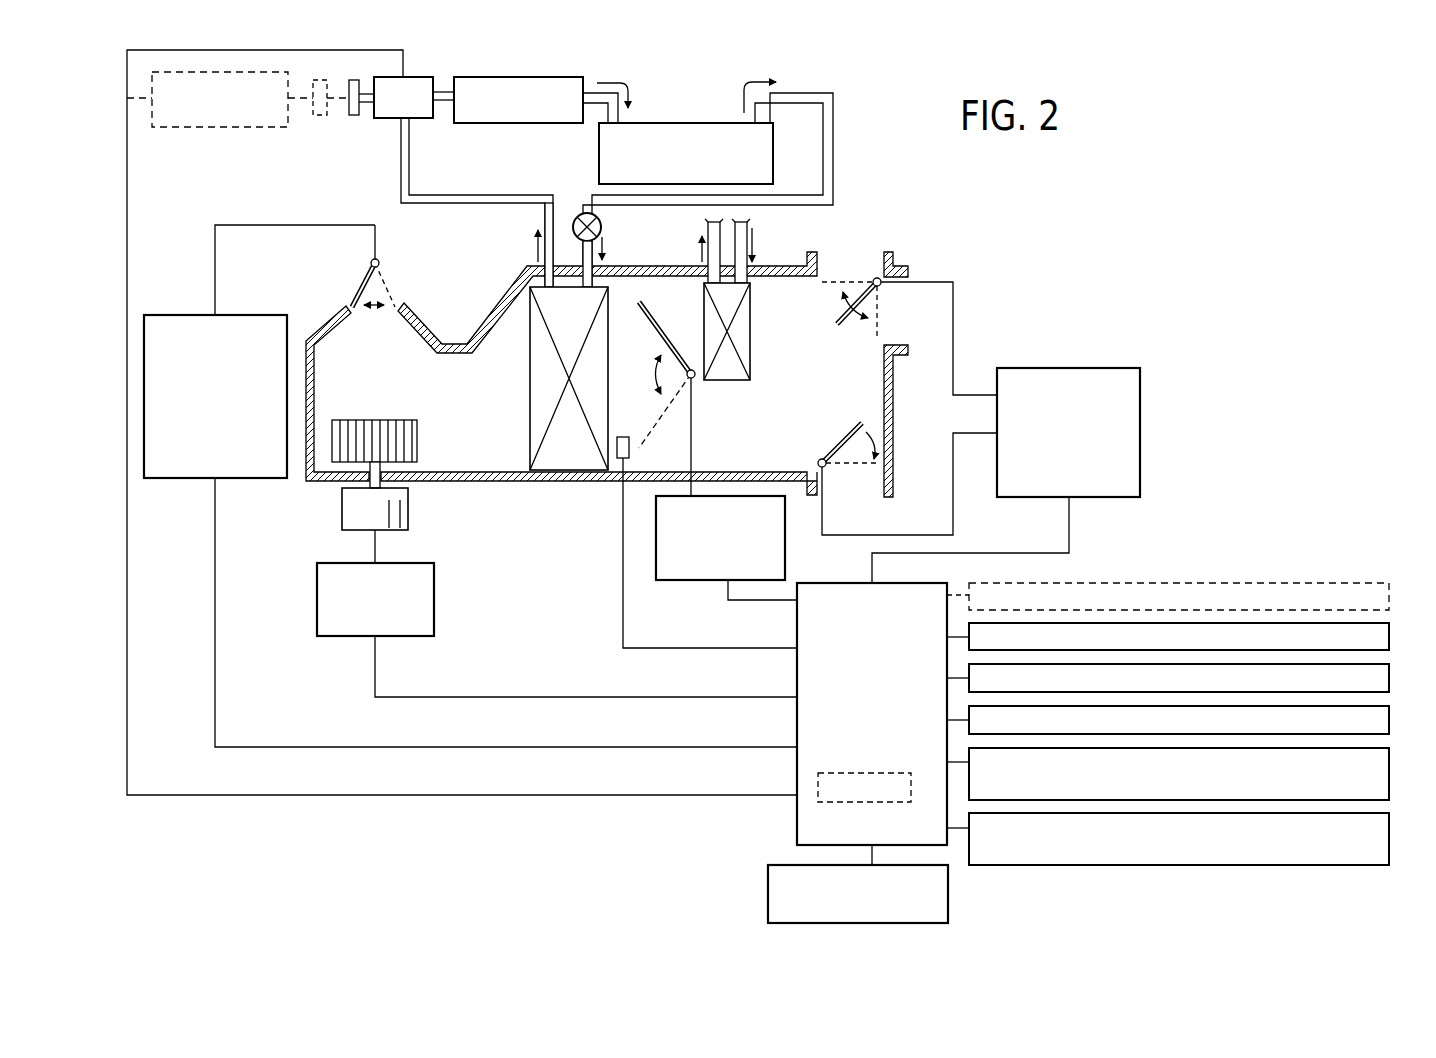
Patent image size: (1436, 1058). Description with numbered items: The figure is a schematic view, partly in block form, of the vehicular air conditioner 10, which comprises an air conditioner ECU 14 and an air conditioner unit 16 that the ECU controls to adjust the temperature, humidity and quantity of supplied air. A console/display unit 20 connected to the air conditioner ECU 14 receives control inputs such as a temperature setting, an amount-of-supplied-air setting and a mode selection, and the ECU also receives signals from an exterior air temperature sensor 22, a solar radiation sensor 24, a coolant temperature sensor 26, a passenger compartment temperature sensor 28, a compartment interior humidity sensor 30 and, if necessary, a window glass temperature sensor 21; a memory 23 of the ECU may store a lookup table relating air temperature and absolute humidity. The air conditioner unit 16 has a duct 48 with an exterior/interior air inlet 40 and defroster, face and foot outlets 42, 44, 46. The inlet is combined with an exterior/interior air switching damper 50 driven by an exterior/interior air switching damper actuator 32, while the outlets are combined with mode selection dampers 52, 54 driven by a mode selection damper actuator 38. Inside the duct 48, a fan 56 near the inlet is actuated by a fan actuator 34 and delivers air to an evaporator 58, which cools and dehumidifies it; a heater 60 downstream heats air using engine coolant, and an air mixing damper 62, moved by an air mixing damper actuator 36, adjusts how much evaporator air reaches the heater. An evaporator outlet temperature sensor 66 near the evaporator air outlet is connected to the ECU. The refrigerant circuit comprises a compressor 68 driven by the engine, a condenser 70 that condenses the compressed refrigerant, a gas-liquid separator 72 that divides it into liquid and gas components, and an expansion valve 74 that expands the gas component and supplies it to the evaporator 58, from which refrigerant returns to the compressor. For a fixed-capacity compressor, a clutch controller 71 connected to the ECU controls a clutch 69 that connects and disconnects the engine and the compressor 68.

The vehicular air conditioner 10 is at (1199, 231).
The air conditioner ECU 14 is at (811, 583).
The air conditioner unit 16 is at (306, 212).
The console/display unit 20 is at (768, 889).
The window glass temperature sensor 21 is at (1390, 595).
The exterior air temperature sensor 22 is at (1390, 637).
The memory 23 is at (898, 773).
The solar radiation sensor 24 is at (1390, 678).
The coolant temperature sensor 26 is at (1390, 720).
The passenger compartment temperature sensor 28 is at (1390, 762).
The compartment interior humidity sensor 30 is at (1390, 828).
The exterior/interior air switching damper actuator 32 is at (262, 315).
The fan actuator 34 is at (410, 638).
The air mixing damper actuator 36 is at (688, 582).
The mode selection damper actuator 38 is at (1115, 368).
The exterior/interior air inlet 40 is at (373, 316).
The defroster outlet 42 is at (852, 262).
The face outlet 44 is at (895, 310).
The foot outlet 46 is at (855, 488).
The duct 48 is at (562, 482).
The exterior/interior air switching damper 50 is at (358, 287).
The mode selection damper 52 is at (835, 313).
The mode selection damper 54 is at (845, 430).
The fan 56 is at (381, 420).
The evaporator 58 is at (530, 378).
The heater 60 is at (751, 336).
The air mixing damper 62 is at (661, 324).
The evaporator outlet temperature sensor 66 is at (623, 437).
The compressor 68 is at (422, 119).
The clutch 69 is at (320, 116).
The condenser 70 is at (562, 124).
The clutch controller 71 is at (203, 128).
The gas-liquid separator 72 is at (773, 152).
The expansion valve 74 is at (601, 227).